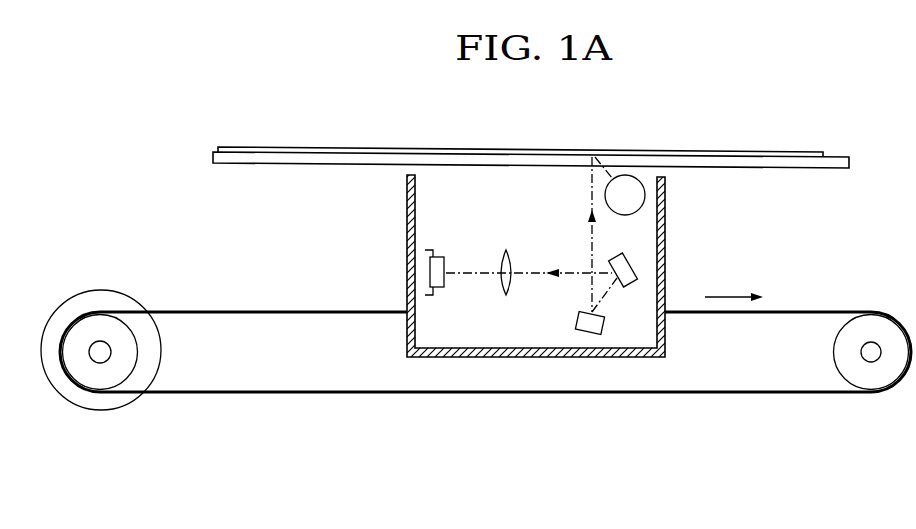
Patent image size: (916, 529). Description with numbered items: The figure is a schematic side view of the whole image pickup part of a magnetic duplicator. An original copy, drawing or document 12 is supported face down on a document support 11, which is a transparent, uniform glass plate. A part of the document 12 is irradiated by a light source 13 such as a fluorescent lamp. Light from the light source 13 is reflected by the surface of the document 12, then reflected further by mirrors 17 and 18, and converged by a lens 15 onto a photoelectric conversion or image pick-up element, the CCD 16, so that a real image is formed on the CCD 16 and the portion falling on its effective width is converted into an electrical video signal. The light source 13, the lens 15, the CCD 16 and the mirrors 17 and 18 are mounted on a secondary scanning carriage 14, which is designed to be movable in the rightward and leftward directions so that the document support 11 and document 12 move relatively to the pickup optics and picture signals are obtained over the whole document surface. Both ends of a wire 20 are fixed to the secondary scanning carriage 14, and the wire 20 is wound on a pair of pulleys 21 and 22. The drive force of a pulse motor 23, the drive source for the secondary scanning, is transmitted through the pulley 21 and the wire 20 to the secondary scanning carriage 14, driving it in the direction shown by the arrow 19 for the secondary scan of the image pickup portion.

The document support 11 is at (846, 157).
The document 12 is at (744, 153).
The light source 13 is at (645, 198).
The secondary scanning carriage 14 is at (407, 197).
The lens 15 is at (510, 258).
The CCD 16 is at (441, 257).
The mirror 17 is at (576, 326).
The mirror 18 is at (636, 271).
The arrow 19 is at (727, 297).
The wire 20 is at (270, 394).
The pulley 21 is at (100, 386).
The pulley 22 is at (873, 320).
The pulse motor 23 is at (125, 297).